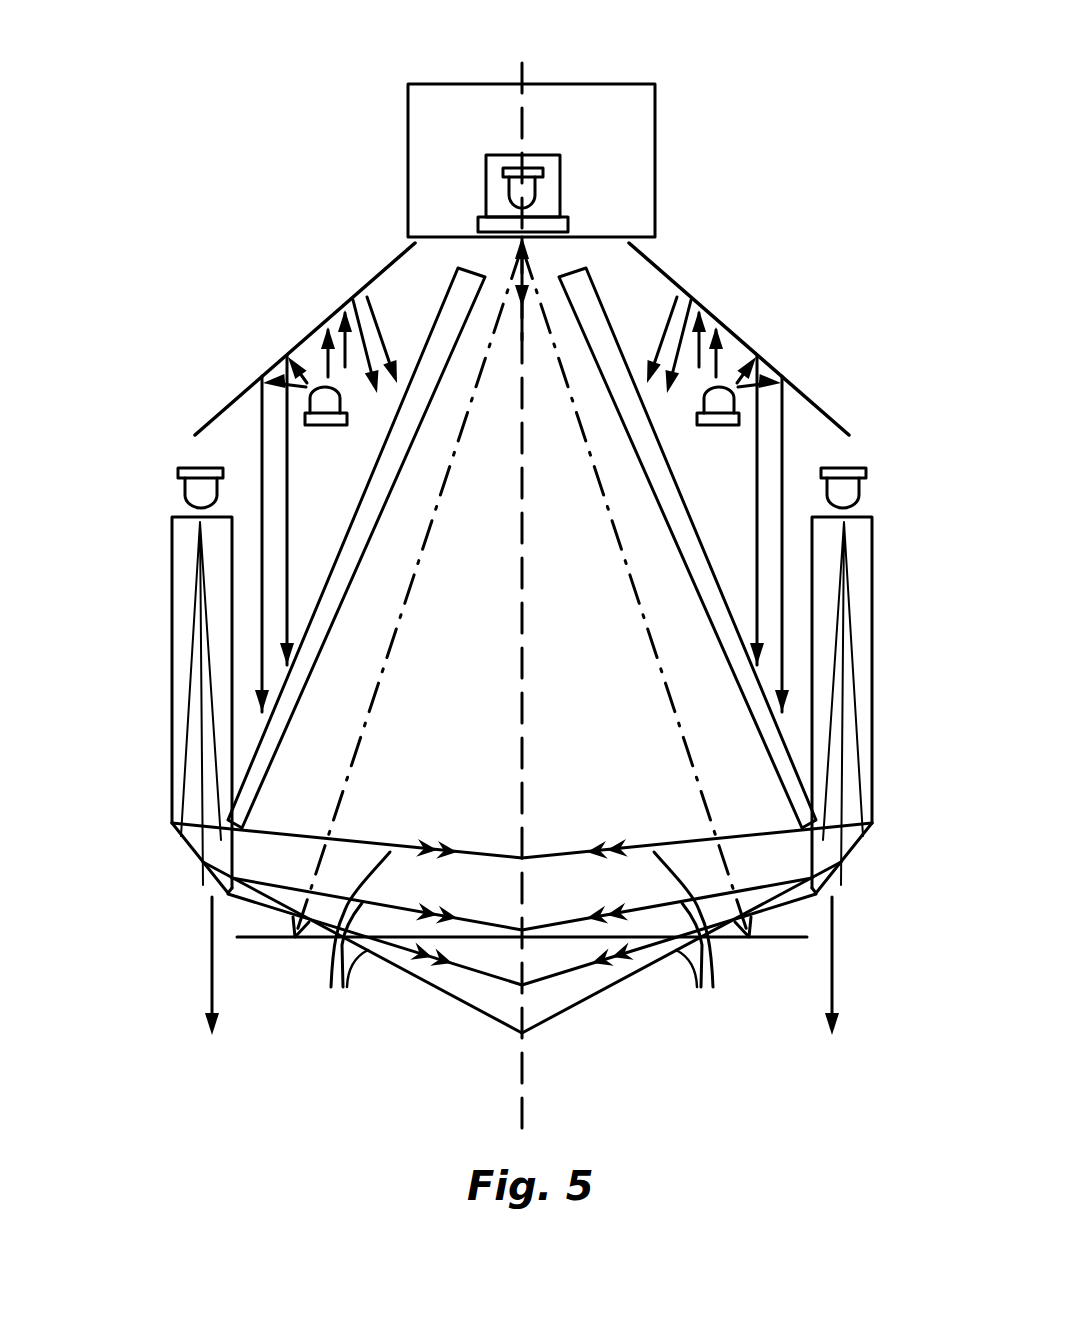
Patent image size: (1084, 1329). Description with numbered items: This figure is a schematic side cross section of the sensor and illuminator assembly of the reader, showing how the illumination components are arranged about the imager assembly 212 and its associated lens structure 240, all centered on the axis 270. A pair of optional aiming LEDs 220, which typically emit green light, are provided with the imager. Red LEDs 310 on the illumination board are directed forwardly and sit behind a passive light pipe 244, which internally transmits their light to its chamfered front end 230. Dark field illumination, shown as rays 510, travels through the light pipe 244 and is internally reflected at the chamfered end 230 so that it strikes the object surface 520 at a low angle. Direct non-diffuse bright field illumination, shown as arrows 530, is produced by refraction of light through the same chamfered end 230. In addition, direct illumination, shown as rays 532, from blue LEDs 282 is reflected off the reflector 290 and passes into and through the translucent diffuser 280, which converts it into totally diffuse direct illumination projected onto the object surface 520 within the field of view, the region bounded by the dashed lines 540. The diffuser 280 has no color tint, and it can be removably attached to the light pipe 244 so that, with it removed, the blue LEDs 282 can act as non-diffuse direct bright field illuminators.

The imager assembly 212 is at (578, 161).
The aiming LEDs 220 is at (543, 170).
The lens structure 240 is at (446, 168).
The axis 270 is at (524, 1128).
The reflector 290 is at (260, 376).
The direct illumination rays 532 is at (842, 373).
The blue LEDs 282 is at (318, 428).
The diffuser 280 is at (332, 563).
The LEDs 310 is at (183, 478).
The light pipe 244 is at (165, 643).
The front end 230 is at (190, 872).
The object surface 520 is at (728, 946).
The dashed lines 540 is at (370, 740).
The dark field illumination rays 510 is at (517, 939).
The bright field illumination arrows 530 is at (212, 975).